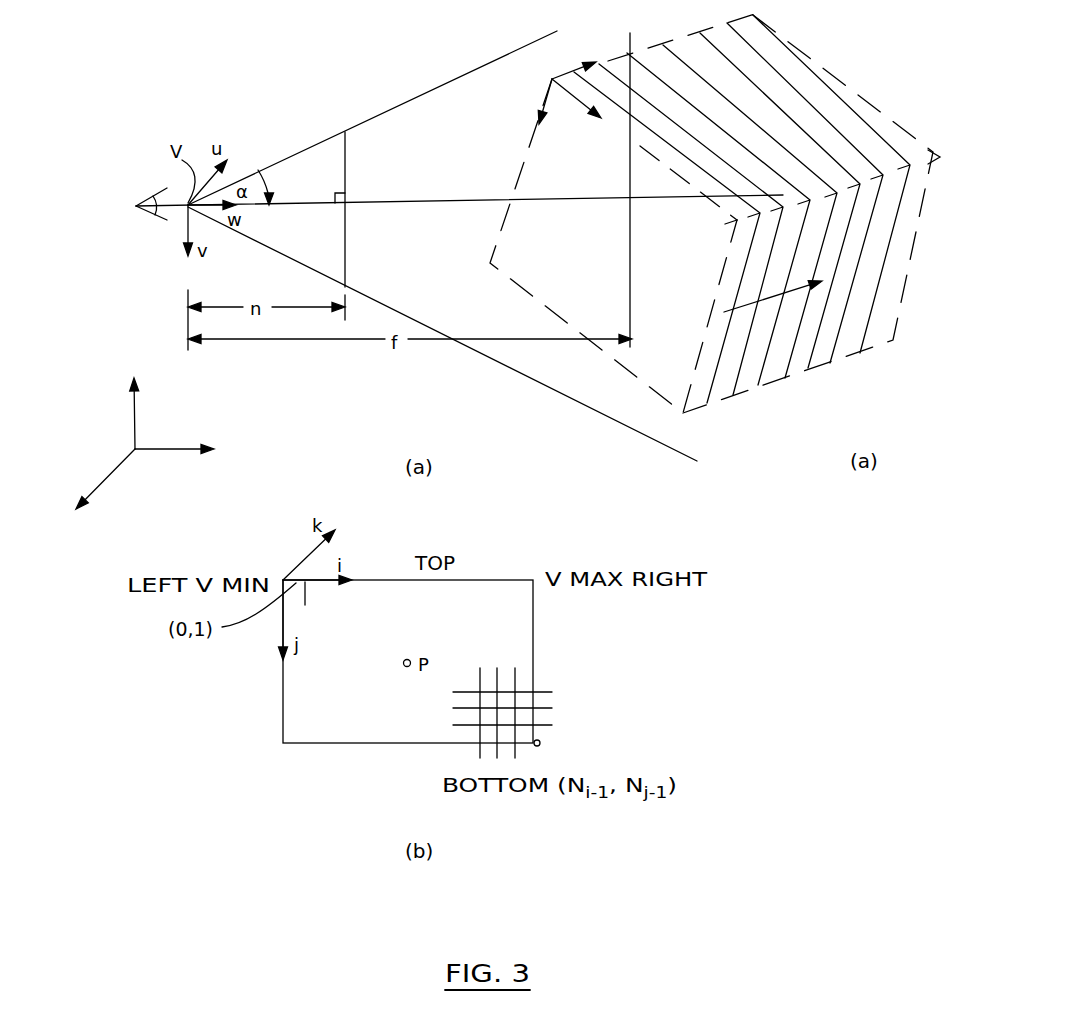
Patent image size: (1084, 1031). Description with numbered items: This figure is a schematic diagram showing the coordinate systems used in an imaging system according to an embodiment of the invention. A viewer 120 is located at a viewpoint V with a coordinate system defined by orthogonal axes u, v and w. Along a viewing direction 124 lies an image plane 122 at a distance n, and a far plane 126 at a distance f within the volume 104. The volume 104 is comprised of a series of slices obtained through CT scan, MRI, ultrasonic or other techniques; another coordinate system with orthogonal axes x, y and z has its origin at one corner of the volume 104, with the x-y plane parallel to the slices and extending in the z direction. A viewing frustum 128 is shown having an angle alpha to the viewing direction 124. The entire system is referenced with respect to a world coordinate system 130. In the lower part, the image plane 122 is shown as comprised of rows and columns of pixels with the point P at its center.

The volume 104 is at (733, 397).
The viewer 120 is at (136, 206).
The image plane 122 is at (344, 158).
The viewing direction 124 is at (412, 198).
The far plane 126 is at (632, 305).
The viewing frustum 128 is at (410, 100).
The world coordinate system 130 is at (134, 425).